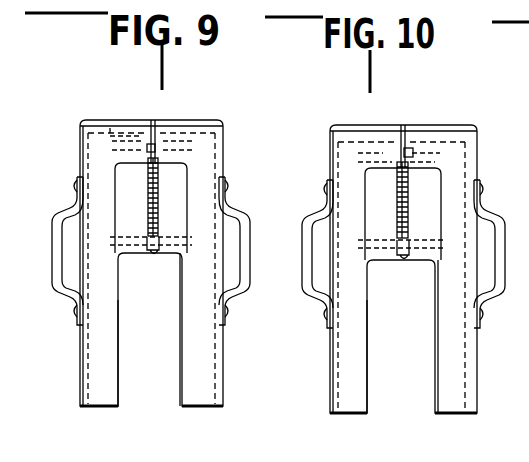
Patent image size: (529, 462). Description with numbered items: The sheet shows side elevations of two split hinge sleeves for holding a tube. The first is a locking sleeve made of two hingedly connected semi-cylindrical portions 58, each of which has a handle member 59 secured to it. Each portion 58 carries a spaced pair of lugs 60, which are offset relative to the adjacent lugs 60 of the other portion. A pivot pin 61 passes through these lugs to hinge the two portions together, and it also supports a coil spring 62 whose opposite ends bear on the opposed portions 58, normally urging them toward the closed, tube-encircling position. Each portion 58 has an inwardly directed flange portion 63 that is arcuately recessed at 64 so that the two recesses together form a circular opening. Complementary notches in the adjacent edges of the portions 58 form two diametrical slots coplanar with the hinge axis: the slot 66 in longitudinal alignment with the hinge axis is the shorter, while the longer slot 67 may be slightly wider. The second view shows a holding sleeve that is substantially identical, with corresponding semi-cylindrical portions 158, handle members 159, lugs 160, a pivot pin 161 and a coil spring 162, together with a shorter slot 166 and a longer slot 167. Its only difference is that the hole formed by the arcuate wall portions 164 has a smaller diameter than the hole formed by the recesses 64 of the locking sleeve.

In FIG. 9, the semi-cylindrical portion 58 is at (98, 163).
In FIG. 9, the handle member 59 is at (57, 265).
In FIG. 9, the lug 60 is at (173, 147).
In FIG. 9, the pivot pin 61 is at (150, 252).
In FIG. 9, the coil spring 62 is at (158, 228).
In FIG. 9, the inwardly directed flange portion 63 is at (112, 128).
In FIG. 9, the arcuate recess 64 is at (116, 133).
In FIG. 9, the slot 66 is at (118, 370).
In FIG. 9, the slot 67 is at (115, 213).
In FIG. 10, the semi-cylindrical portion 158 is at (333, 363).
In FIG. 10, the handle member 159 is at (312, 288).
In FIG. 10, the lug 160 is at (408, 153).
In FIG. 10, the pivot pin 161 is at (402, 257).
In FIG. 10, the coil spring 162 is at (406, 224).
In FIG. 10, the arcuate wall portion 164 is at (365, 133).
In FIG. 10, the slot 166 is at (368, 383).
In FIG. 10, the slot 167 is at (370, 227).